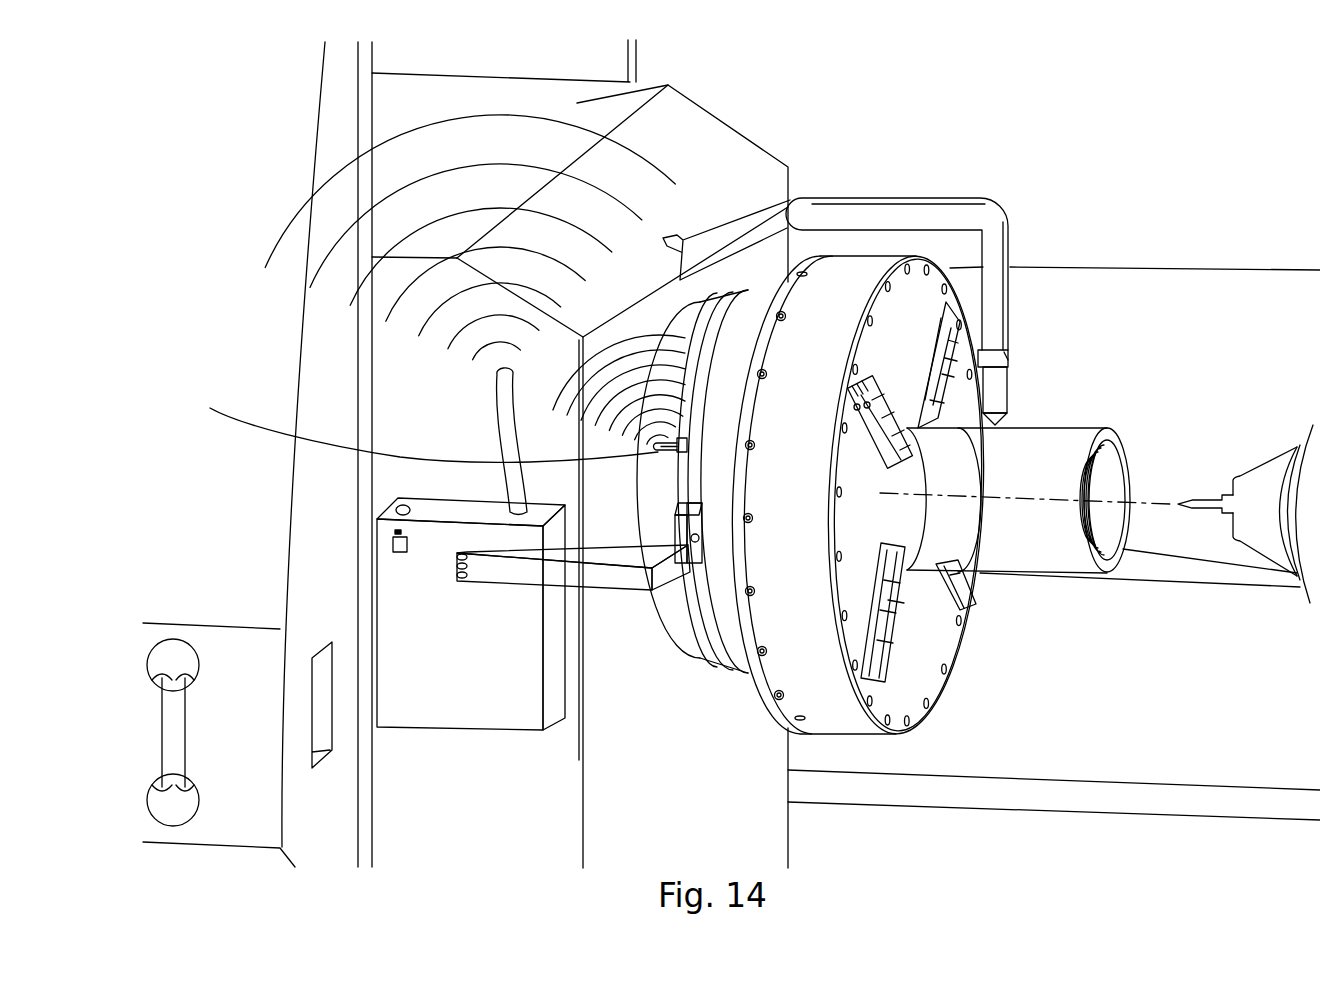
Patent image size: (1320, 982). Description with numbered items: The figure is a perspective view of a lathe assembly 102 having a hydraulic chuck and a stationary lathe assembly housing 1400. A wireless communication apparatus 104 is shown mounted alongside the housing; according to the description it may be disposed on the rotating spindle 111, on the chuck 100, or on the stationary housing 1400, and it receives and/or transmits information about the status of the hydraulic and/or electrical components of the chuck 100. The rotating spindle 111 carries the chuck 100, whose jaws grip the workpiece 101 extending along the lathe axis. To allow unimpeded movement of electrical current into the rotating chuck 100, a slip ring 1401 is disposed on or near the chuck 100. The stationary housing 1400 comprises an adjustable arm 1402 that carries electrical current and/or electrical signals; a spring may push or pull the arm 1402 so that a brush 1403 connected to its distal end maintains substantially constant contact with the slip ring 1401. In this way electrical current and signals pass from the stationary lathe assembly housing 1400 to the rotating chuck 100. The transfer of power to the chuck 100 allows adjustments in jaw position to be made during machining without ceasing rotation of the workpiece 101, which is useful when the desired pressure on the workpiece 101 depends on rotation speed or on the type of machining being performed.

The chuck 100 is at (918, 736).
The workpiece 101 is at (1080, 423).
The lathe assembly 102 is at (1110, 152).
The wireless communication apparatus 104 is at (417, 623).
The rotating spindle 111 is at (724, 292).
The stationary lathe assembly housing 1400 is at (628, 82).
The slip ring 1401 is at (698, 635).
The adjustable arm 1402 is at (588, 585).
The brush 1403 is at (698, 498).